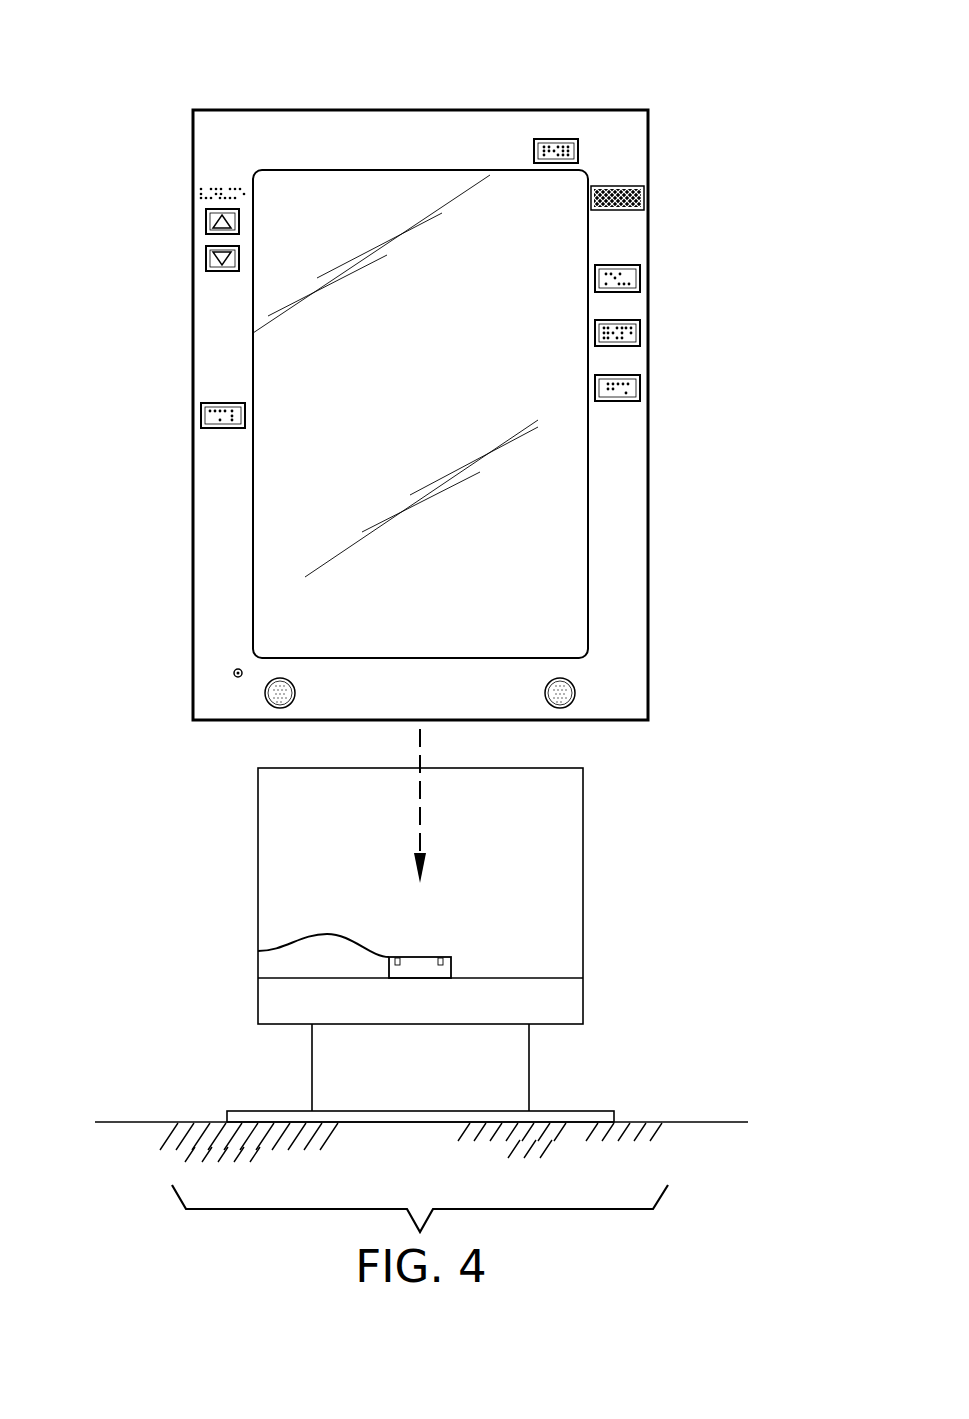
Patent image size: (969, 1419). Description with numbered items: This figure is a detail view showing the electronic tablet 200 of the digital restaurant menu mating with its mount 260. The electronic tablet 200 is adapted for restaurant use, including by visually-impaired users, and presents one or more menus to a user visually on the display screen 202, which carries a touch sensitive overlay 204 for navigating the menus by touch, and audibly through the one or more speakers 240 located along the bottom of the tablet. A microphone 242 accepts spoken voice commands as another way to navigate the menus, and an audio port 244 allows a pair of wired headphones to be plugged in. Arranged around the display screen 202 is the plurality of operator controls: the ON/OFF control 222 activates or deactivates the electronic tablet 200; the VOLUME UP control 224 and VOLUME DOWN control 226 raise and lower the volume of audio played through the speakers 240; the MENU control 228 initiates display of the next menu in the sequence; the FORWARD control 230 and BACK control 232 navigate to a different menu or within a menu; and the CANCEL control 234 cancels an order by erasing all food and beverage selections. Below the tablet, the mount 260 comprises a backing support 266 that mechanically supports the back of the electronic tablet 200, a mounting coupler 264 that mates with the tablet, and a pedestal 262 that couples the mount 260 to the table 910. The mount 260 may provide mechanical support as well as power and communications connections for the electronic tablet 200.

The electronic tablet 200 is at (305, 110).
The display screen 202 is at (420, 172).
The touch sensitive overlay 204 is at (545, 511).
The ON/OFF control 222 is at (578, 150).
The VOLUME UP control 224 is at (208, 217).
The VOLUME DOWN control 226 is at (208, 258).
The MENU control 228 is at (640, 273).
The FORWARD control 230 is at (640, 328).
The BACK control 232 is at (640, 386).
The CANCEL control 234 is at (205, 414).
The speakers 240 is at (282, 697).
The microphone 242 is at (644, 197).
The audio port 244 is at (233, 674).
The mount 260 is at (514, 933).
The pedestal 262 is at (507, 1062).
The mounting coupler 264 is at (258, 951).
The backing support 266 is at (583, 870).
The table 910 is at (132, 1122).